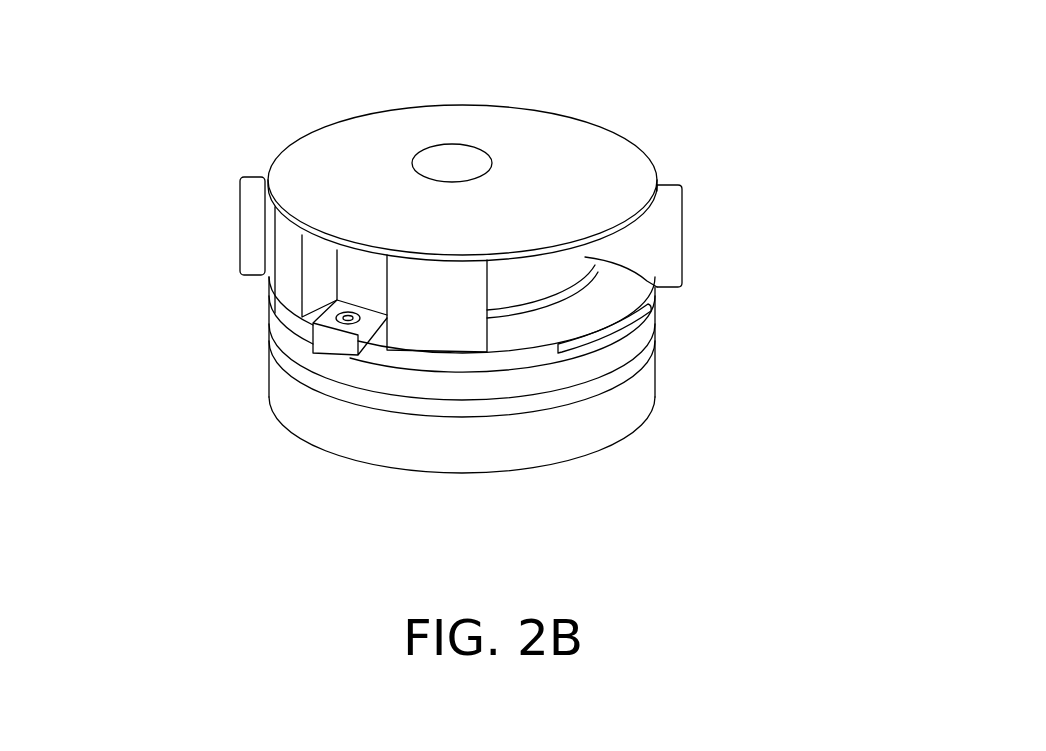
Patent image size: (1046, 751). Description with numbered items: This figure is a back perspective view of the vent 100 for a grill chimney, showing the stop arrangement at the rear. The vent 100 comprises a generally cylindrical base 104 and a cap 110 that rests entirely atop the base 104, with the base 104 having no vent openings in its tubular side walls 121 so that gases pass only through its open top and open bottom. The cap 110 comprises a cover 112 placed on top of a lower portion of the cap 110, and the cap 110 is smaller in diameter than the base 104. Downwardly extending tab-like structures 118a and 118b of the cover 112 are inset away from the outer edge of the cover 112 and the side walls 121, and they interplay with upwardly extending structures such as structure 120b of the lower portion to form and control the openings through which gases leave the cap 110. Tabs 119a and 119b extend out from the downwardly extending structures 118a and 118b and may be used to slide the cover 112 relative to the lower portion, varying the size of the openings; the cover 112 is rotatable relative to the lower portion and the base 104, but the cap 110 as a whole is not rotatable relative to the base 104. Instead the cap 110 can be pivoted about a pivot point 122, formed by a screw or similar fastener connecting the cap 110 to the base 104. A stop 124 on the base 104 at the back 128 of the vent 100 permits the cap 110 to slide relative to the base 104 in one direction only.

The vent 100 is at (645, 78).
The base 104 is at (270, 453).
The cap 110 is at (216, 284).
The cover 112 is at (360, 150).
The downwardly extending structure 118a is at (363, 282).
The downwardly extending structure 118b is at (585, 256).
The tab 119a is at (258, 227).
The tab 119b is at (667, 278).
The upwardly extending structure 120b is at (457, 320).
The tubular side walls 121 is at (632, 398).
The pivot point 122 is at (333, 338).
The stop 124 is at (593, 340).
The back 128 is at (390, 448).